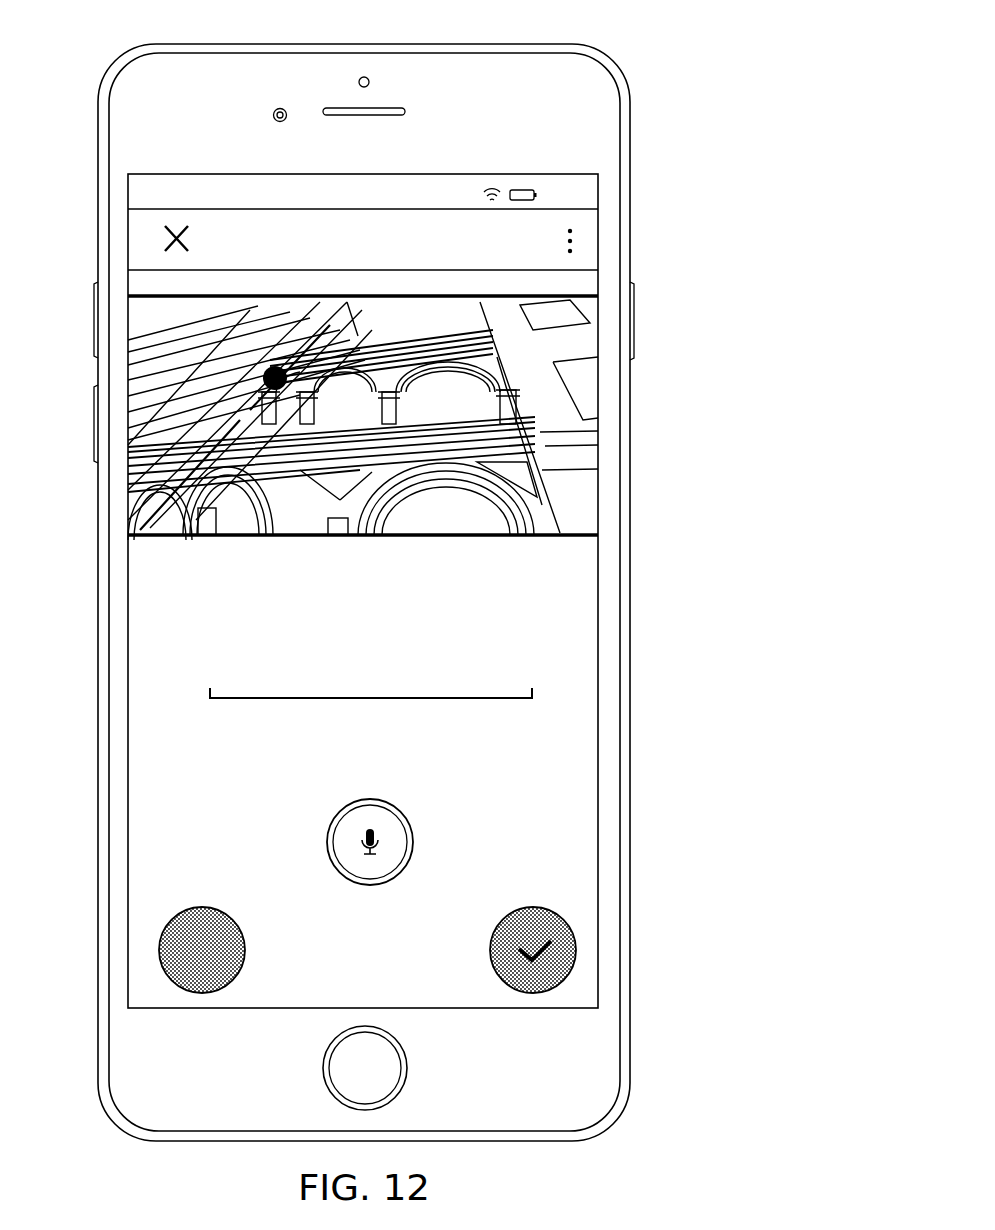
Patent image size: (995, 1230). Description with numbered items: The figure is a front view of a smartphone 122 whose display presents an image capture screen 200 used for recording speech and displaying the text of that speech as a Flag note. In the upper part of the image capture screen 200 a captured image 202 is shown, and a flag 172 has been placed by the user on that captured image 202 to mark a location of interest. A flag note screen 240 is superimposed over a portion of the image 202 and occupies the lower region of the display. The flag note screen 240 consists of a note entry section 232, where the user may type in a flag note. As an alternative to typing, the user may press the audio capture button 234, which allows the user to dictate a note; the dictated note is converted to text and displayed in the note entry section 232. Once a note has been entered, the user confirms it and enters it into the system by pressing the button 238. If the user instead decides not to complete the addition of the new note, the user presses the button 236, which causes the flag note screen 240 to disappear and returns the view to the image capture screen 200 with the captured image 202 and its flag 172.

The smartphone 122 is at (582, 44).
The image capture screen 200 is at (598, 184).
The captured image 202 is at (592, 398).
The flag 172 is at (262, 373).
The flag note screen 240 is at (370, 780).
The note entry section 232 is at (492, 688).
The audio capture button 234 is at (402, 814).
The button 236 is at (162, 935).
The button 238 is at (563, 935).